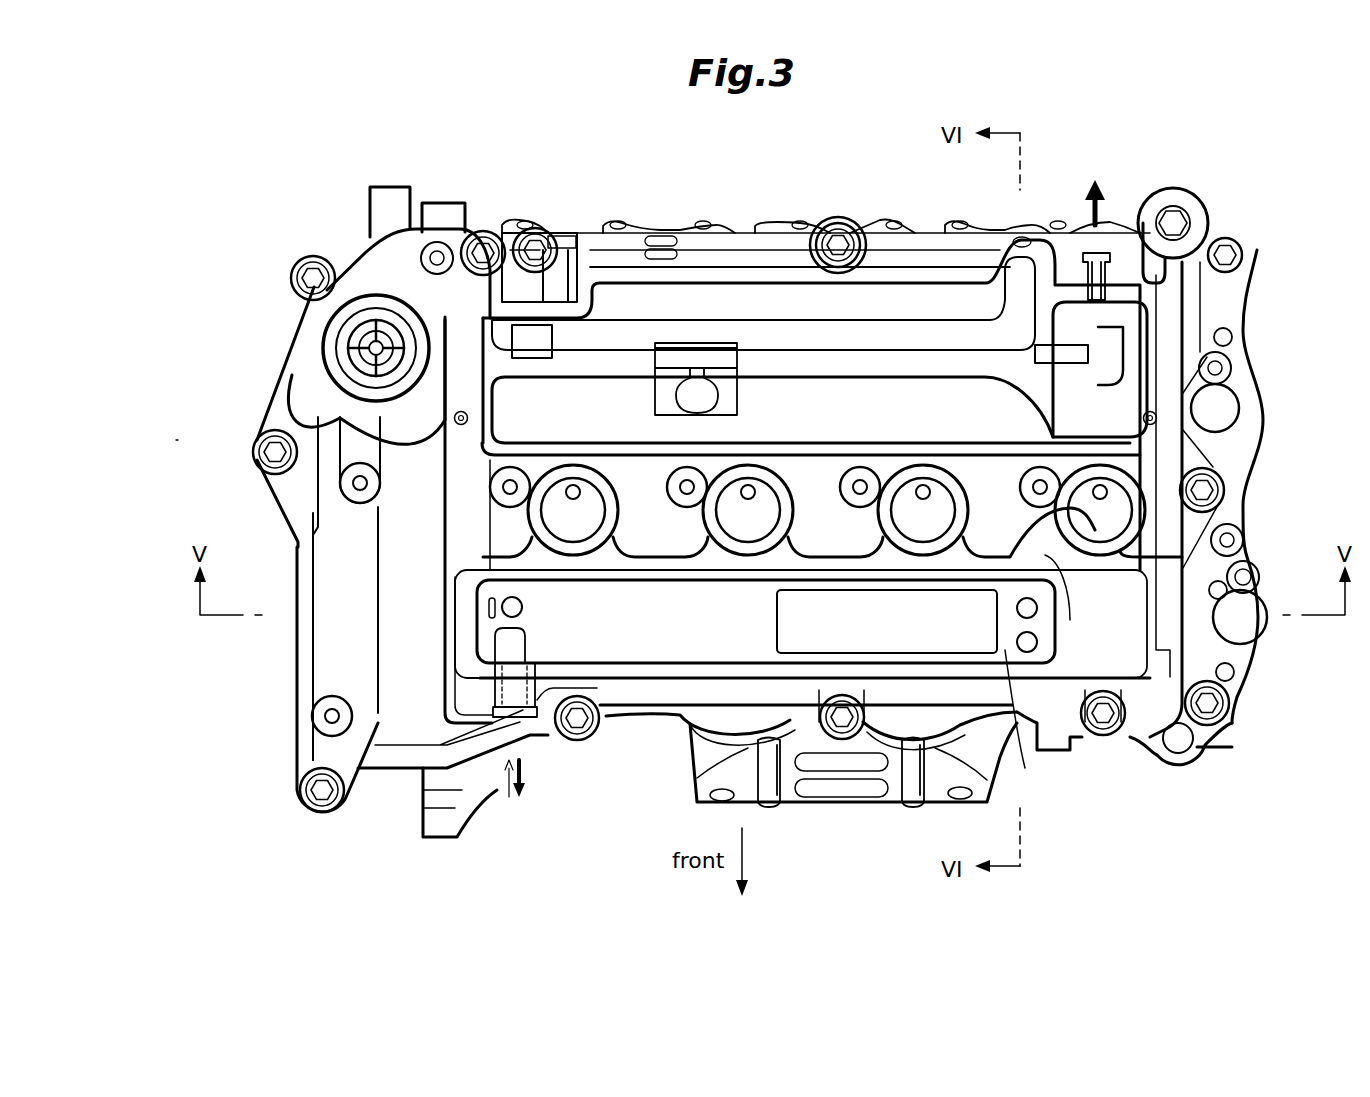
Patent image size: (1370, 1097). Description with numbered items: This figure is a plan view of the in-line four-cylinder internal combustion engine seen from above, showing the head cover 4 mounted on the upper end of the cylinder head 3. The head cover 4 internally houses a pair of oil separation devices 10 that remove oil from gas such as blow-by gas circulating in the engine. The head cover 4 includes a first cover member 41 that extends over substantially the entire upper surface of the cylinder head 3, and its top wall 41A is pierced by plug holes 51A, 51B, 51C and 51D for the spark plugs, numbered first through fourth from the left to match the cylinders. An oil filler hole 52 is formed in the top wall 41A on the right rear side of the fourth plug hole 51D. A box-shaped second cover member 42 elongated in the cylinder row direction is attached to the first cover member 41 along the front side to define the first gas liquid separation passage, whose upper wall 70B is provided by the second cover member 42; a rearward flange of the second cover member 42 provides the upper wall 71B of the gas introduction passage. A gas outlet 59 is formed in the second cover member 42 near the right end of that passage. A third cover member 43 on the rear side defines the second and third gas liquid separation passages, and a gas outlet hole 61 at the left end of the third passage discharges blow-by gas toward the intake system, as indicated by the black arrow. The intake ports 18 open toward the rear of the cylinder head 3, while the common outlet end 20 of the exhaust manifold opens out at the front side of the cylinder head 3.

The cylinder head 3 is at (1237, 303).
The head cover 4 is at (190, 372).
The oil separation device 10 is at (680, 282).
The intake port 18 is at (620, 233).
The common outlet end of the exhaust manifold 20 is at (806, 752).
The first cover member 41 is at (328, 568).
The top wall 41A is at (325, 656).
The second cover member 42 is at (475, 572).
The third cover member 43 is at (485, 432).
The first plug hole 51A is at (1100, 510).
The second plug hole 51B is at (923, 510).
The third plug hole 51C is at (748, 510).
The fourth plug hole 51D is at (573, 510).
The oil filler hole 52 is at (345, 340).
The gas outlet 59 is at (505, 700).
The gas outlet hole 61 is at (1098, 262).
The upper wall of the first gas liquid separation passage 70B is at (1030, 724).
The upper wall of the gas introduction passage 71B is at (1045, 555).